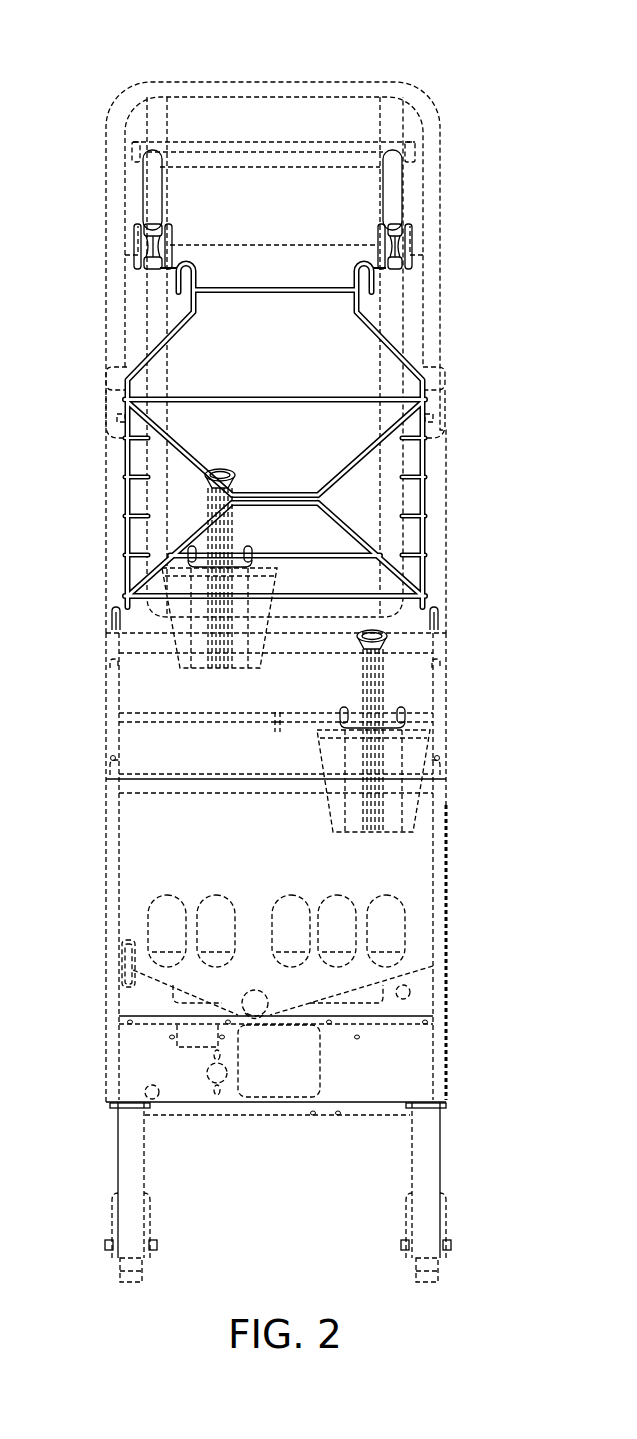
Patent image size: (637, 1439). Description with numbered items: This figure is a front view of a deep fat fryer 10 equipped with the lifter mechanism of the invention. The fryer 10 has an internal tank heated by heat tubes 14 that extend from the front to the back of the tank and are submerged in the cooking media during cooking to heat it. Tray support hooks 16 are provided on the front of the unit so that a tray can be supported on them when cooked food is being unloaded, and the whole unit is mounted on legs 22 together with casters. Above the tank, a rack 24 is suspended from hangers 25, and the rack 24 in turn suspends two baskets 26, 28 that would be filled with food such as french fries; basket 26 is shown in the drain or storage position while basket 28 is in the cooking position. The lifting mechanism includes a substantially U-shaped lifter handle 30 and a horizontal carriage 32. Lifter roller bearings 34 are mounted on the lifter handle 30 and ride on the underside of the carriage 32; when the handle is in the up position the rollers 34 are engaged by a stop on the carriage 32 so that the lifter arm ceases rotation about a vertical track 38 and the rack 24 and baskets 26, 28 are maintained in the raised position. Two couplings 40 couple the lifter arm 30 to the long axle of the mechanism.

The deep fat fryer 10 is at (463, 920).
The heat tubes 14 is at (170, 895).
The tray support hooks 16 is at (117, 627).
The legs 22 is at (148, 1164).
The rack 24 is at (188, 320).
The hangers 25 is at (157, 267).
The basket 26 is at (228, 468).
The basket 28 is at (363, 675).
The lifter handle 30 is at (226, 84).
The horizontal carriage 32 is at (287, 141).
The lifter roller bearings 34 is at (143, 253).
The vertical track 38 is at (147, 126).
The couplings 40 is at (108, 400).